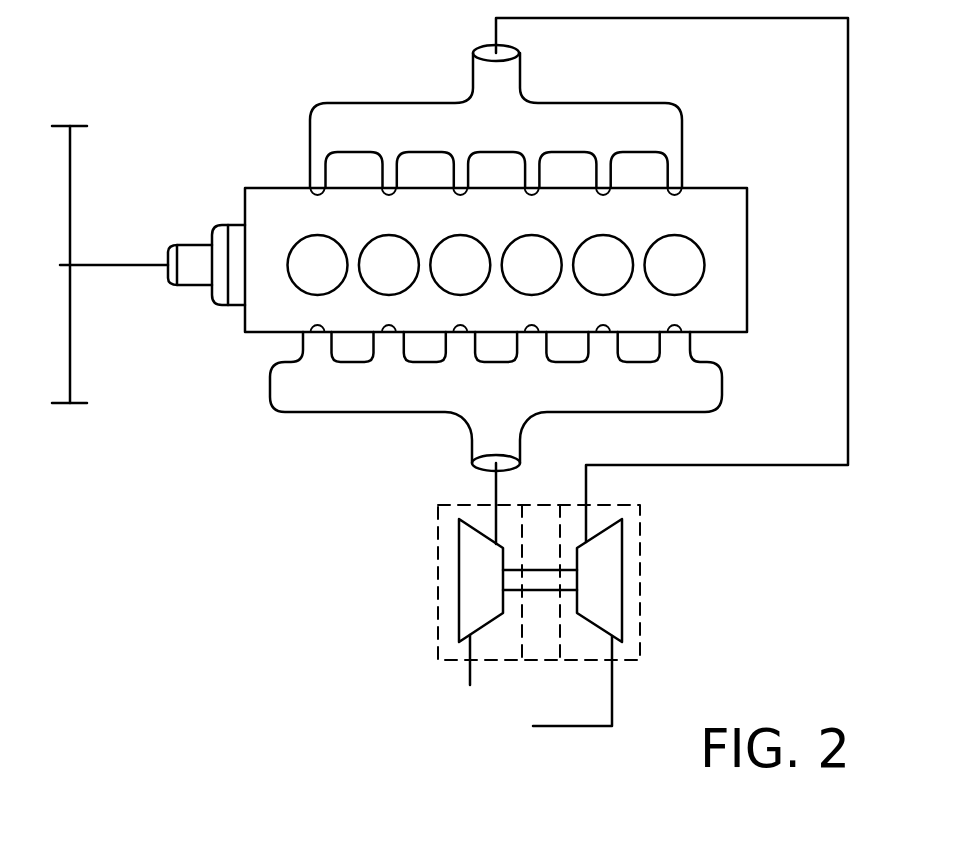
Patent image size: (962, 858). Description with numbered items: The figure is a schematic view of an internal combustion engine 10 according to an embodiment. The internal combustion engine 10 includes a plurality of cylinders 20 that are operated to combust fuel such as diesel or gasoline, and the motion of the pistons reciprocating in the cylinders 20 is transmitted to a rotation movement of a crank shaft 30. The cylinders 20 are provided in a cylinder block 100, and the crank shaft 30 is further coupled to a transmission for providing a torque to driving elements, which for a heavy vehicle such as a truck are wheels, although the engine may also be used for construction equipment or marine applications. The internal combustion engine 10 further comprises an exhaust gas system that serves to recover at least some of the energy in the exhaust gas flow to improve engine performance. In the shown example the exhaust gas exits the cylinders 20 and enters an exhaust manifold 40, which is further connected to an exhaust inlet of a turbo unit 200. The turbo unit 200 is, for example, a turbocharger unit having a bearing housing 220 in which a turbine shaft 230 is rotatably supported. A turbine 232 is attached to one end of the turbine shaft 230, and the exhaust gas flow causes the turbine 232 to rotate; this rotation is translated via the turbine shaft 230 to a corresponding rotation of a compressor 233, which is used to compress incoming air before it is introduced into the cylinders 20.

The internal combustion engine 10 is at (250, 138).
The cylinders 20 is at (332, 277).
The crank shaft 30 is at (112, 327).
The exhaust manifold 40 is at (722, 385).
The cylinder block 100 is at (715, 290).
The turbo unit 200 is at (392, 556).
The bearing housing 220 is at (538, 518).
The turbine shaft 230 is at (543, 580).
The turbine 232 is at (463, 608).
The compressor 233 is at (613, 612).